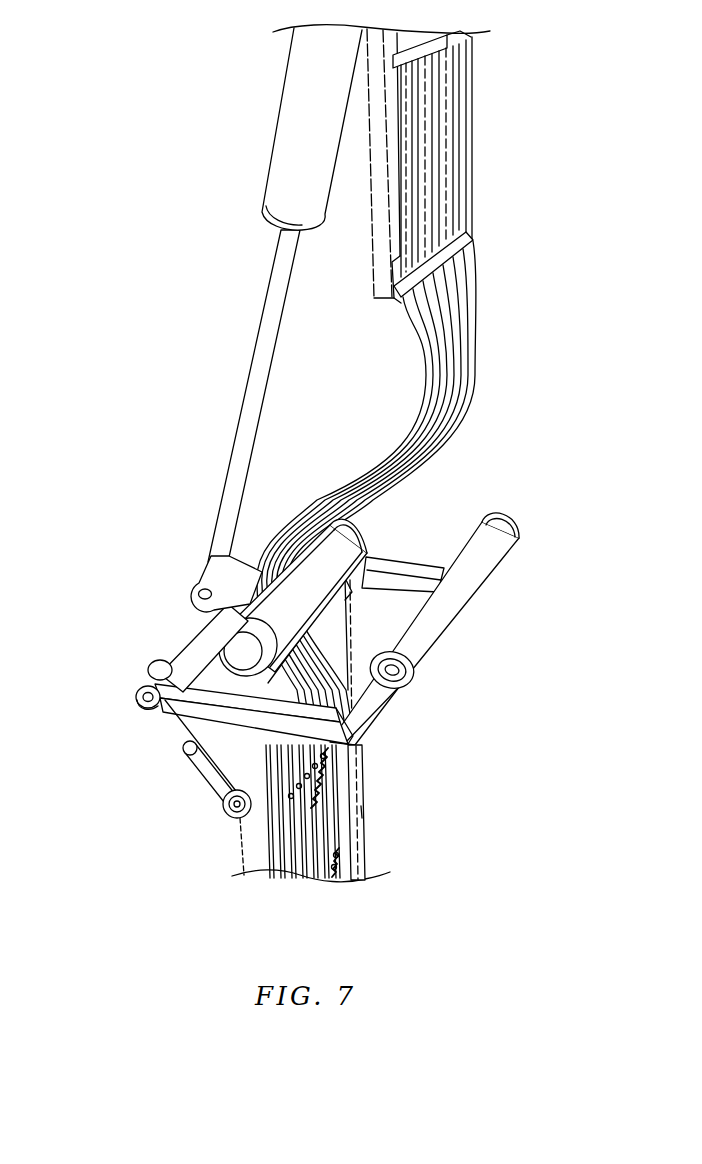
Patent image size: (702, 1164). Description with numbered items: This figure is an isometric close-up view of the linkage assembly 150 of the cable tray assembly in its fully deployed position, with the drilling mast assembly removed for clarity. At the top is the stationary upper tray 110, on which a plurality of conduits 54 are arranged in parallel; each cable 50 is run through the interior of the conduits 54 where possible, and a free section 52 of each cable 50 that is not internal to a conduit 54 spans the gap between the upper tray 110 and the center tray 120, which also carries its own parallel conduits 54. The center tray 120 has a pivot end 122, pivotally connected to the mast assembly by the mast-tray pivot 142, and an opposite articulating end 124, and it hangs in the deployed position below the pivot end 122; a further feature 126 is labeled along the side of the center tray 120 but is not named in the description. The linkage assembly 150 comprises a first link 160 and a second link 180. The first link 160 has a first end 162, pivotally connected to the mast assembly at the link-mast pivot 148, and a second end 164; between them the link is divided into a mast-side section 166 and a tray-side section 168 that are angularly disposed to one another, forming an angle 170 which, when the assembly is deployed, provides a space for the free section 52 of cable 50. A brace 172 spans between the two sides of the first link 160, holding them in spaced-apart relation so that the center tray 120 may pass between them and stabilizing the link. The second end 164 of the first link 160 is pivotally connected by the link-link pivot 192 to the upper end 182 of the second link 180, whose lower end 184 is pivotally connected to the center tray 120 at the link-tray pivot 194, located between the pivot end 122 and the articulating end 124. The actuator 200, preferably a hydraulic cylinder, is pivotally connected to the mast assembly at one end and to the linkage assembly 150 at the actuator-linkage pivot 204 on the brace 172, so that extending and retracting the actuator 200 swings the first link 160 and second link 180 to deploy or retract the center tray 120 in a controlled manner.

The cable 50 is at (474, 372).
The free section 52 is at (480, 400).
The conduits 54 is at (300, 830).
The upper tray 110 is at (473, 128).
The center tray 120 is at (362, 783).
The pivot end 122 is at (367, 558).
The articulating end 124 is at (380, 868).
The strip slot 126 is at (362, 812).
The mast-tray pivot 142 is at (163, 670).
The link-mast pivot 148 is at (497, 533).
The linkage assembly 150 is at (481, 491).
The first link 160 is at (403, 557).
The first end 162 is at (410, 702).
The second end 164 is at (152, 707).
The mast-side section 166 is at (377, 711).
The tray-side section 168 is at (188, 748).
The angle 170 is at (412, 668).
The brace 172 is at (204, 644).
The second link 180 is at (215, 753).
The upper end 182 is at (197, 703).
The lower end 184 is at (213, 763).
The link-link pivot 192 is at (142, 700).
The link-tray pivot 194 is at (232, 811).
The actuator 200 is at (270, 166).
The actuator-linkage pivot 204 is at (197, 594).